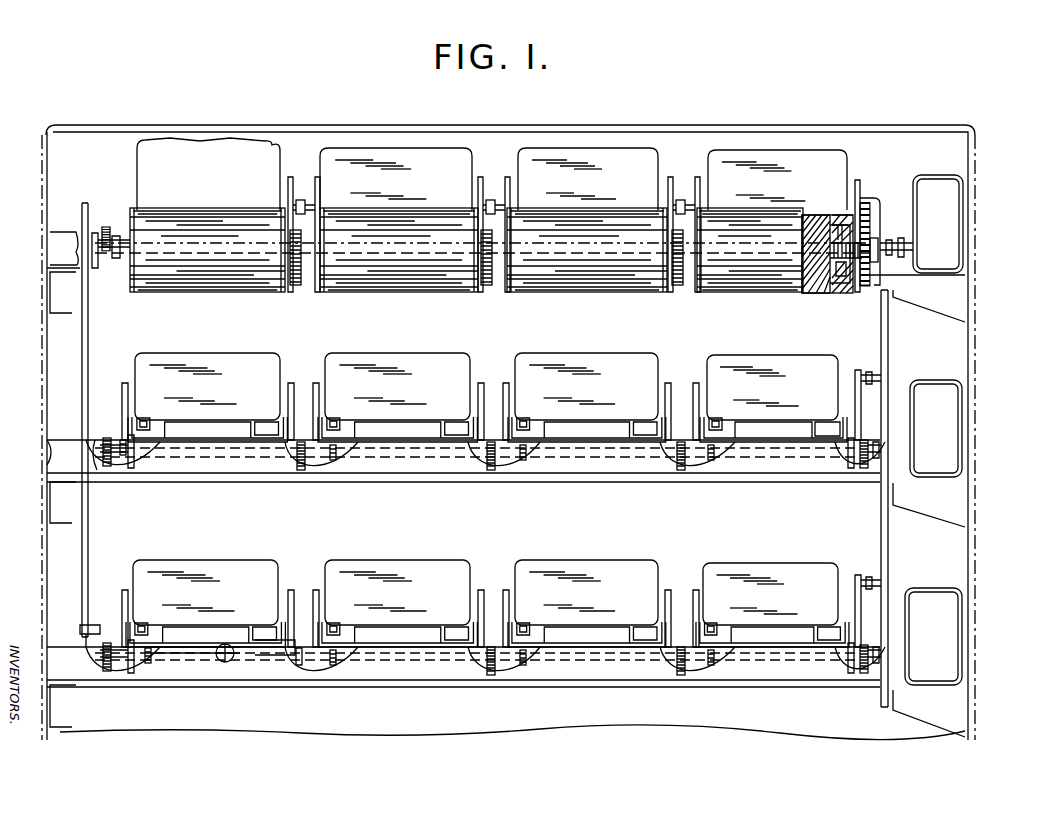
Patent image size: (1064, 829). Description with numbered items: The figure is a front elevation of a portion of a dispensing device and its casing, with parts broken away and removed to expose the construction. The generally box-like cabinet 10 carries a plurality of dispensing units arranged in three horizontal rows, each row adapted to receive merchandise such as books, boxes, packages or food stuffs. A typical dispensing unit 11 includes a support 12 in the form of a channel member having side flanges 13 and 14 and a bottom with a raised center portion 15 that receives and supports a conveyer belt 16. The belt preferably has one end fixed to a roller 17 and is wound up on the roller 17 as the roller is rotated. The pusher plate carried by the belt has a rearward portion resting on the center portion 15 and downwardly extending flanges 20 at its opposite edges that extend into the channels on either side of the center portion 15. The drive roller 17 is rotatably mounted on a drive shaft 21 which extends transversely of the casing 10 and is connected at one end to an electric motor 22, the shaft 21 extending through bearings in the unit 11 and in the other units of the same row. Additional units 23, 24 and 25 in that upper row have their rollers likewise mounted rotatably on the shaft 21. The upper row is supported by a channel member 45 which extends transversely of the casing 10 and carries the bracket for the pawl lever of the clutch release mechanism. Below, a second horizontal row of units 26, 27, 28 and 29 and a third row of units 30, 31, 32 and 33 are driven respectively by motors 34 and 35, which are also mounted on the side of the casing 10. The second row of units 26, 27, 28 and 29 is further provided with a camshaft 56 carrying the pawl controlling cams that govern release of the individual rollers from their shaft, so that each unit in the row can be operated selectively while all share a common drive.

The cabinet 10 is at (968, 293).
The dispensing unit 11 is at (866, 196).
The support 12 is at (818, 401).
The side flange 13 is at (848, 182).
The side flange 14 is at (700, 205).
The raised center portion 15 is at (770, 430).
The conveyer belt 16 is at (200, 282).
The roller 17 is at (838, 295).
The downwardly extending flanges 20 is at (845, 425).
The drive shaft 21 is at (810, 293).
The electric motor 22 is at (950, 228).
The dispensing unit 23 is at (578, 145).
The dispensing unit 24 is at (378, 145).
The dispensing unit 25 is at (185, 135).
The dispensing unit 26 is at (258, 346).
The dispensing unit 27 is at (446, 346).
The dispensing unit 28 is at (632, 346).
The dispensing unit 29 is at (745, 352).
The dispensing unit 30 is at (220, 554).
The dispensing unit 31 is at (411, 555).
The dispensing unit 32 is at (603, 555).
The dispensing unit 33 is at (785, 555).
The motor 34 is at (950, 425).
The motor 35 is at (945, 639).
The channel member 45 is at (778, 476).
The camshaft 56 is at (697, 462).